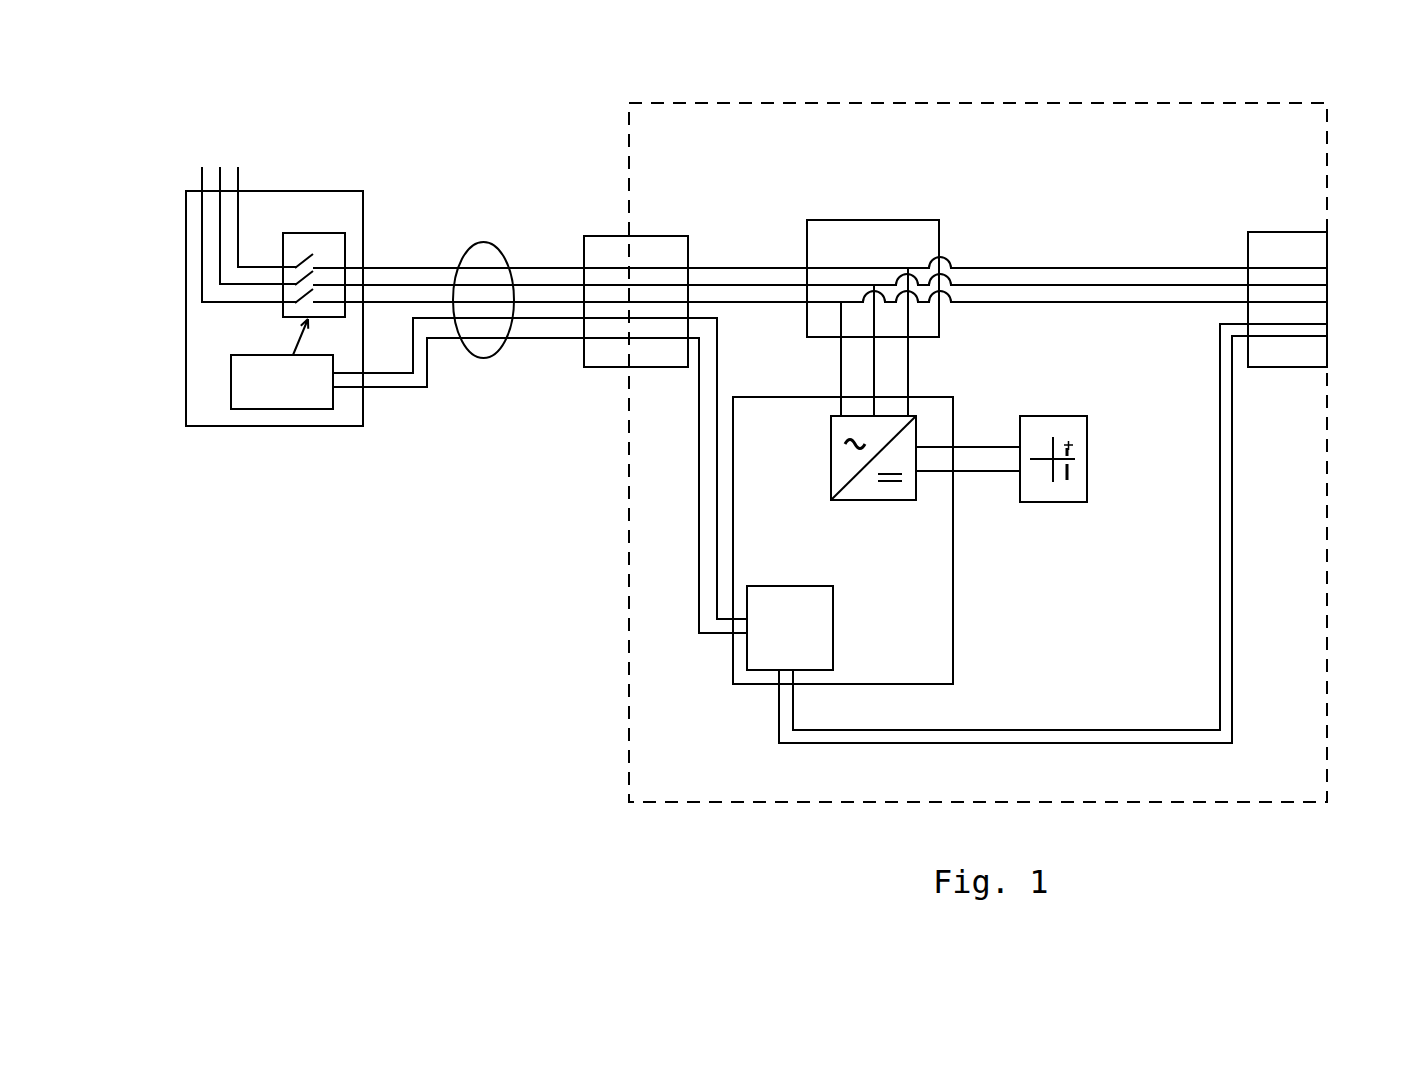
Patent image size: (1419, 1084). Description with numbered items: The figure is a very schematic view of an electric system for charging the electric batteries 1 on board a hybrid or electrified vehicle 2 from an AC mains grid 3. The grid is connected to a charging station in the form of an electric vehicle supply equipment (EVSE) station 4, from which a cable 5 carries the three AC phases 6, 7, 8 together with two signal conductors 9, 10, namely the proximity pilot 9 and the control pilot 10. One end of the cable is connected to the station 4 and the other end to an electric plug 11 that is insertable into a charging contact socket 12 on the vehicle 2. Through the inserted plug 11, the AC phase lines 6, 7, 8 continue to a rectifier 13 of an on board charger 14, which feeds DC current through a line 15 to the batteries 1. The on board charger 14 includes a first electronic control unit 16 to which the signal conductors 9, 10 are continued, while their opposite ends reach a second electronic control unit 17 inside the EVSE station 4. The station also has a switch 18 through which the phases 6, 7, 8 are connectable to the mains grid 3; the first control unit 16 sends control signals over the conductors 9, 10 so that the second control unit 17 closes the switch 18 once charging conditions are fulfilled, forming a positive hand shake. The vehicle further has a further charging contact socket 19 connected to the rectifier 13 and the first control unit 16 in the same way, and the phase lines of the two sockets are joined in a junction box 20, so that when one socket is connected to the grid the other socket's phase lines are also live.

The electric batteries 1 is at (1060, 502).
The hybrid or electrified vehicle 2 is at (1327, 152).
The AC mains grid 3 is at (238, 182).
The electric vehicle supply equipment (EVSE) station 4 is at (186, 388).
The cable 5 is at (477, 360).
The AC phase 6 is at (432, 267).
The AC phase 7 is at (407, 284).
The AC phase 8 is at (382, 302).
The proximity pilot signal conductor 9 is at (396, 374).
The control pilot signal conductor 10 is at (408, 387).
The electric plug 11 is at (603, 367).
The charging contact socket 12 is at (660, 236).
The rectifier 13 is at (883, 500).
The on board charger (OBC) 14 is at (953, 625).
The line 15 is at (972, 447).
The first electronic control unit 16 is at (757, 586).
The second electronic control unit 17 is at (277, 409).
The switch 18 is at (310, 233).
The further charging contact socket 19 is at (1267, 232).
The junction box 20 is at (852, 220).